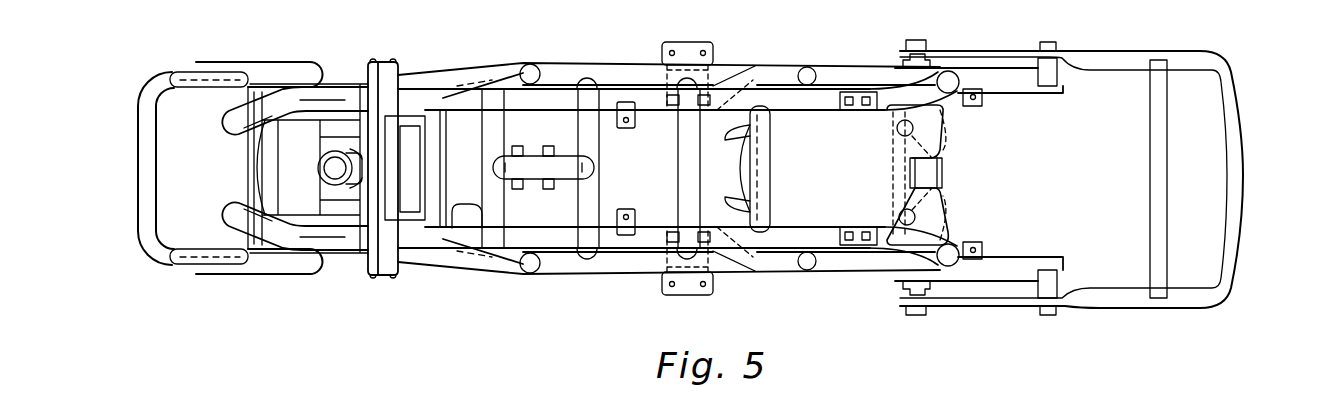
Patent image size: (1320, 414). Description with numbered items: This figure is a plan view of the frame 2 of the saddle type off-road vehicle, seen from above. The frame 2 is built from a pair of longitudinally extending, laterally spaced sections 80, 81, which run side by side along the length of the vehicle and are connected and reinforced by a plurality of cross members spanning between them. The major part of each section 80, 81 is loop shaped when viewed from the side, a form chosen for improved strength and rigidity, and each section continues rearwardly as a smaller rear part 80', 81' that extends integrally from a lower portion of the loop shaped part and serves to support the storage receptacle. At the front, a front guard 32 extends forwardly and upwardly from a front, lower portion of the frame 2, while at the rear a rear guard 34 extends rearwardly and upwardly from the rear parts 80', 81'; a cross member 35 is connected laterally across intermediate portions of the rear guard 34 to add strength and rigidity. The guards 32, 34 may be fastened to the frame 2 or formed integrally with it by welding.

The frame 2 is at (499, 303).
The front guard 32 is at (137, 168).
The rear guard 34 is at (1117, 52).
The cross member 35 is at (1168, 173).
The section 80 is at (641, 189).
The rear part 80' is at (945, 168).
The section 81 is at (678, 139).
The rear part 81' is at (994, 174).